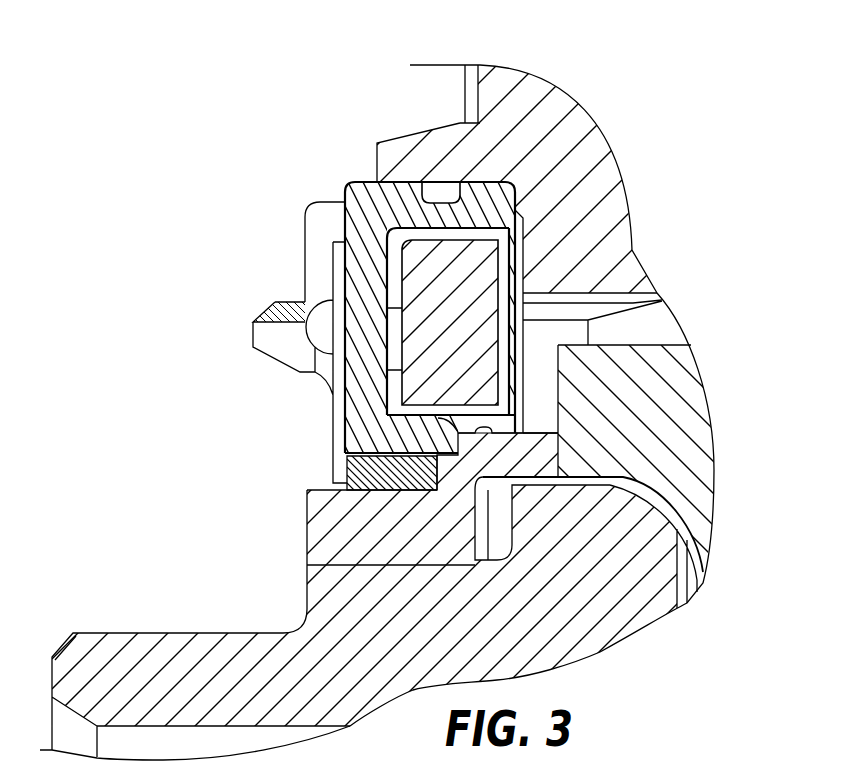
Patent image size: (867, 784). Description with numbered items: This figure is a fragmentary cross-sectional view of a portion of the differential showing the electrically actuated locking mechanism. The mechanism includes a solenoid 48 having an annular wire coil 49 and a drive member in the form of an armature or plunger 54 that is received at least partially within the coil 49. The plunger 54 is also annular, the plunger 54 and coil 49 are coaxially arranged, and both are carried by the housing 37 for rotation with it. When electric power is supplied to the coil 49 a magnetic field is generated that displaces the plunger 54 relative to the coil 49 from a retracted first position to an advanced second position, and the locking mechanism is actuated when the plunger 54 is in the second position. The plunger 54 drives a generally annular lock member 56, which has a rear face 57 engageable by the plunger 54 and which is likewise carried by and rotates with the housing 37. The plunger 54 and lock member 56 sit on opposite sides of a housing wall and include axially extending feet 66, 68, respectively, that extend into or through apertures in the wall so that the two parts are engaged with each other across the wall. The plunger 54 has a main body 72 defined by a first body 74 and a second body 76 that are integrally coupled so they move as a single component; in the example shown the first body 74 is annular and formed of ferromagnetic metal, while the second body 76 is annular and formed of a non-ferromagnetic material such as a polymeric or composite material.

The housing 37 is at (566, 108).
The solenoid 48 is at (338, 192).
The annular wire coil 49 is at (422, 257).
The plunger 54 is at (300, 503).
The lock member 56 is at (678, 377).
The rear face 57 is at (558, 367).
The feet of the plunger 66 is at (552, 440).
The feet of the lock member 68 is at (667, 340).
The main body 72 is at (300, 490).
The first body 74 is at (352, 472).
The second body 76 is at (320, 547).